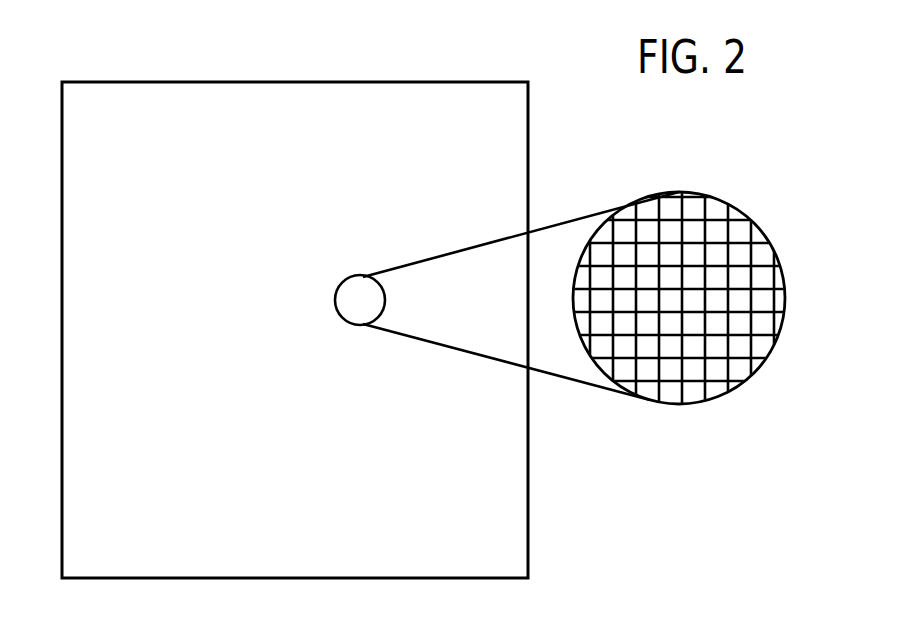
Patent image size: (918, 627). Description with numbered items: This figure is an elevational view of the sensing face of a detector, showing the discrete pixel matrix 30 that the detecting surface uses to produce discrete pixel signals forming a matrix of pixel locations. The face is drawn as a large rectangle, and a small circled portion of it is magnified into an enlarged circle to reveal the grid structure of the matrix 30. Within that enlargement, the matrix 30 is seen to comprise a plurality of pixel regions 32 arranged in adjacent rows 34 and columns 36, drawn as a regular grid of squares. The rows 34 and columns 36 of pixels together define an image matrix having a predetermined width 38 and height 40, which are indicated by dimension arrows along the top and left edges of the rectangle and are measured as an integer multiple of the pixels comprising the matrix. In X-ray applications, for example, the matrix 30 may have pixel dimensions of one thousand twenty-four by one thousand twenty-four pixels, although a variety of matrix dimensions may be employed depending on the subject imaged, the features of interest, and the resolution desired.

The discrete pixel matrix 30 is at (517, 529).
The pixel regions 32 is at (708, 305).
The rows 34 is at (787, 297).
The columns 36 is at (697, 192).
The width 38 is at (528, 36).
The height 40 is at (54, 82).